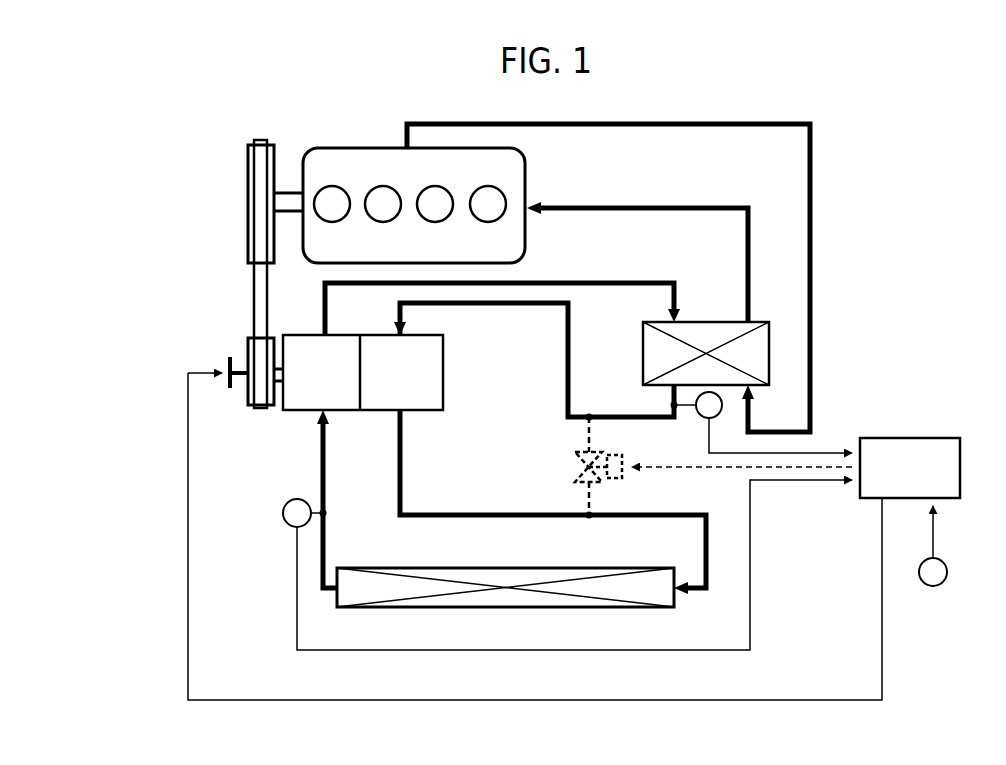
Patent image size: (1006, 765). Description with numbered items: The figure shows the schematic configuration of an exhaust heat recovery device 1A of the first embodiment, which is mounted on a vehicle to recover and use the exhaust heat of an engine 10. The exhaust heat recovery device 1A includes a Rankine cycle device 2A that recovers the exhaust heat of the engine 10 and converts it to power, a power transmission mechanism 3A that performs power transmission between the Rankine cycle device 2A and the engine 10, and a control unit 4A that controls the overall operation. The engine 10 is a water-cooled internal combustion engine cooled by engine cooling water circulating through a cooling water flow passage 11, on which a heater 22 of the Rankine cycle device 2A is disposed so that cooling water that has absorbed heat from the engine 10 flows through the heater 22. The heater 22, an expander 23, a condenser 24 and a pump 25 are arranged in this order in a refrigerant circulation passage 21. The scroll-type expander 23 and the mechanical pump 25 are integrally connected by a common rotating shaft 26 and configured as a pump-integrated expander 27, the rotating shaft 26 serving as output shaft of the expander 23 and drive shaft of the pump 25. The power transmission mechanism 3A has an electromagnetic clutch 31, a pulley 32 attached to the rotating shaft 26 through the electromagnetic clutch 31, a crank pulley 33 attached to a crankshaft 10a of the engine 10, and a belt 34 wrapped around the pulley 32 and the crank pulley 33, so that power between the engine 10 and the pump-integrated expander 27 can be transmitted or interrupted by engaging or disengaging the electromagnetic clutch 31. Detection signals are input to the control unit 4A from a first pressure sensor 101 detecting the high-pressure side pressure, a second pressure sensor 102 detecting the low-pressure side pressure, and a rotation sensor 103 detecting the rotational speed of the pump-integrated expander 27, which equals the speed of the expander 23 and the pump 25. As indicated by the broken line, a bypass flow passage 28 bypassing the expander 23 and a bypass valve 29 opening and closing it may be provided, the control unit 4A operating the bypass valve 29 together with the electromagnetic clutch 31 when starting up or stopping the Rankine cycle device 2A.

The exhaust heat recovery device 1A is at (870, 107).
The Rankine cycle device 2A is at (272, 610).
The power transmission mechanism 3A is at (163, 105).
The control unit 4A is at (905, 438).
The engine 10 is at (527, 173).
The crankshaft 10a is at (292, 213).
The cooling water flow passage 11 is at (812, 186).
The refrigerant circulation passage 21 is at (570, 283).
The heater 22 is at (697, 322).
The expander 23 is at (401, 372).
The condenser 24 is at (497, 568).
The pump 25 is at (321, 372).
The rotating shaft 26 is at (278, 385).
The pump-integrated expander 27 is at (444, 367).
The bypass flow passage 28 is at (589, 442).
The bypass valve 29 is at (578, 468).
The electromagnetic clutch 31 is at (229, 365).
The pulley 32 is at (248, 352).
The crank pulley 33 is at (248, 178).
The belt 34 is at (249, 288).
The first pressure sensor 101 is at (700, 414).
The second pressure sensor 102 is at (283, 515).
The rotation sensor 103 is at (942, 585).